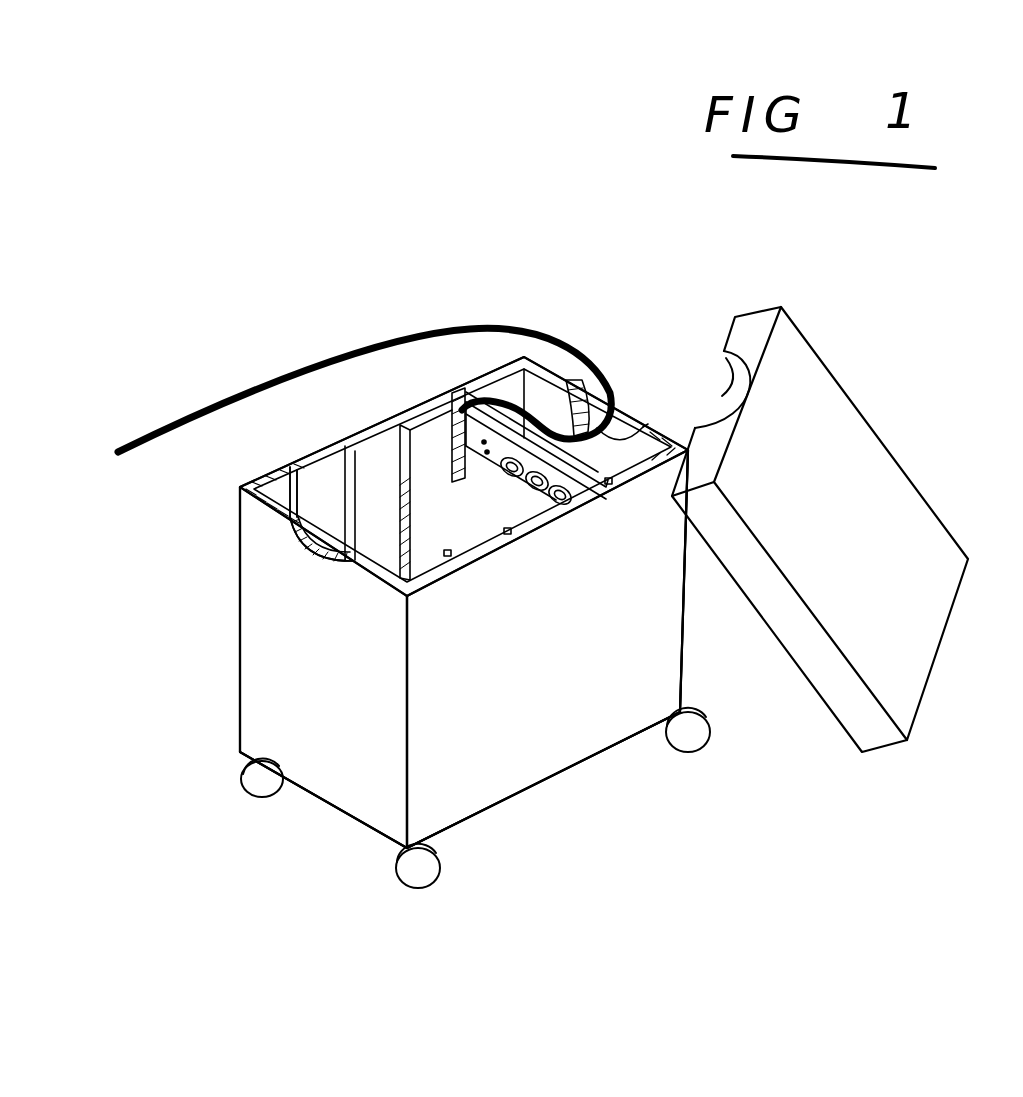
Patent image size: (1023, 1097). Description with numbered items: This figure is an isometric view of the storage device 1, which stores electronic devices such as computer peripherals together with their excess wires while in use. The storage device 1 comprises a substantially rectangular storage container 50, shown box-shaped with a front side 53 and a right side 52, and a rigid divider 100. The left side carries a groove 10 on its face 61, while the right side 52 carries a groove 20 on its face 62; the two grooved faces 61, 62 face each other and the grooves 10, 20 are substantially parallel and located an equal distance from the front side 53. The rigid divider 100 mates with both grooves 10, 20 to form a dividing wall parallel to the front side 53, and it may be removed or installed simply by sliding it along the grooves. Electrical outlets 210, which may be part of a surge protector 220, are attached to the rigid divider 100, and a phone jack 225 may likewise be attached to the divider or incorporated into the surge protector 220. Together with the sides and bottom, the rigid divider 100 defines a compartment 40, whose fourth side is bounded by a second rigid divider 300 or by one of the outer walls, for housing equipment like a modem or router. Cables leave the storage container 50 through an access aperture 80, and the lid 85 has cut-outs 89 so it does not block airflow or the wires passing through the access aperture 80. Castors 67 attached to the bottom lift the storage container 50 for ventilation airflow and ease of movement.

The storage device 1 is at (348, 257).
The groove 10 is at (466, 393).
The groove 20 is at (573, 465).
The compartment 40 is at (436, 428).
The substantially rectangular storage container 50 is at (238, 662).
The right side 52 is at (540, 690).
The front side 53 is at (330, 700).
The face 61 is at (300, 458).
The face 62 is at (362, 558).
The castors 67 is at (490, 827).
The access aperture 80 is at (292, 546).
The lid 85 is at (820, 529).
The cut-outs 89 is at (731, 392).
The rigid divider 100 is at (562, 470).
The electrical outlets 210 is at (532, 492).
The surge protector 220 is at (497, 467).
The phone jack 225 is at (447, 448).
The second rigid divider 300 is at (478, 531).